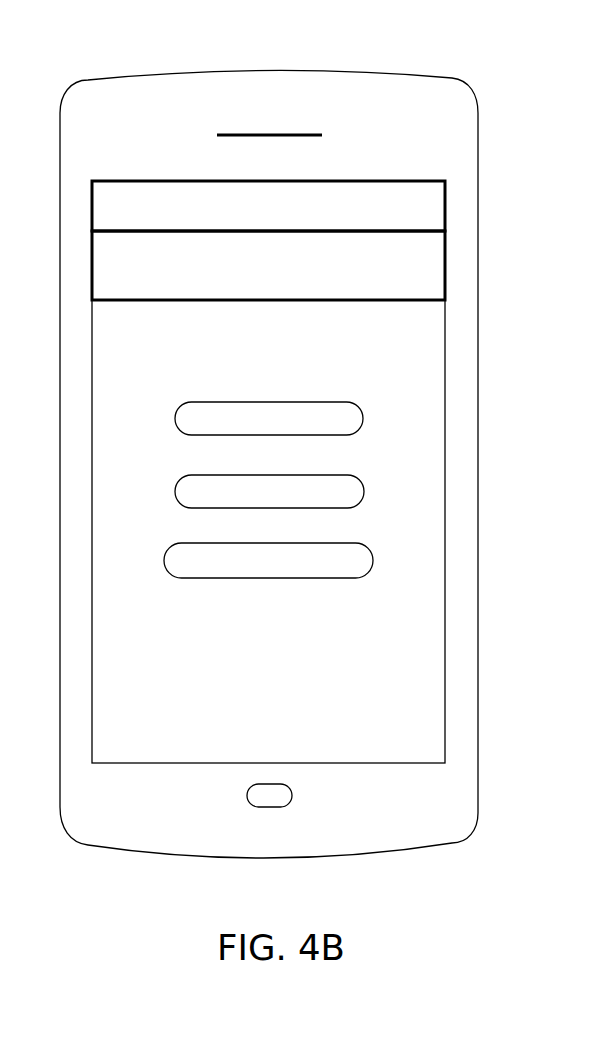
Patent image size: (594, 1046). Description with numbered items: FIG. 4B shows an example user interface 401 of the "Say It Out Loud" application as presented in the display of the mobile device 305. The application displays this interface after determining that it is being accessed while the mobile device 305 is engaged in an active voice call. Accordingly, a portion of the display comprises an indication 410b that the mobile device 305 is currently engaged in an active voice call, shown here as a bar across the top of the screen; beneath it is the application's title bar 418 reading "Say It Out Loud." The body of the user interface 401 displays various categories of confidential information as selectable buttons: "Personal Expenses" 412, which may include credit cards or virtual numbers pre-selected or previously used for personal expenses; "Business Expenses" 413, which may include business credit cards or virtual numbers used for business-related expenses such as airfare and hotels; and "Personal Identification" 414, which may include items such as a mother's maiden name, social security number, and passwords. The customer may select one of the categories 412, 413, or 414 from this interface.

The user interface 401 is at (34, 84).
The mobile device 305 is at (465, 128).
The indication 410b is at (435, 211).
The application title bar 418 is at (435, 256).
The "Personal Expenses" category 412 is at (366, 405).
The "Business Expenses" category 413 is at (367, 478).
The "Personal Identification" category 414 is at (374, 556).